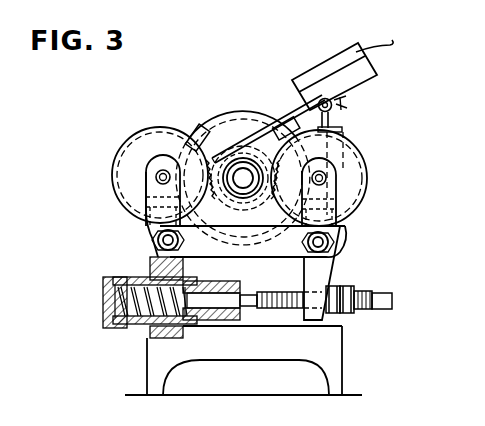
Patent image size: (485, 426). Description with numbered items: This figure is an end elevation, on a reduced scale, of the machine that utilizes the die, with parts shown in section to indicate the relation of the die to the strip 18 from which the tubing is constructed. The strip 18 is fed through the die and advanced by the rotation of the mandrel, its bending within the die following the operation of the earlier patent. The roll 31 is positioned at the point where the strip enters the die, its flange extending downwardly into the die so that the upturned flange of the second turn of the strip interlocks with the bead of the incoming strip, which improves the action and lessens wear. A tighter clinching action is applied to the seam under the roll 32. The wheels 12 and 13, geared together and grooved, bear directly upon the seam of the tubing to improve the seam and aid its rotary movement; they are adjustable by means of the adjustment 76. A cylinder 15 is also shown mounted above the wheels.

The wheel 12 is at (118, 157).
The wheel 13 is at (358, 149).
The cylinder 15 is at (334, 63).
The strip 18 is at (283, 105).
The roll 31 is at (207, 150).
The roll 32 is at (187, 160).
The adjustment 76 is at (347, 288).